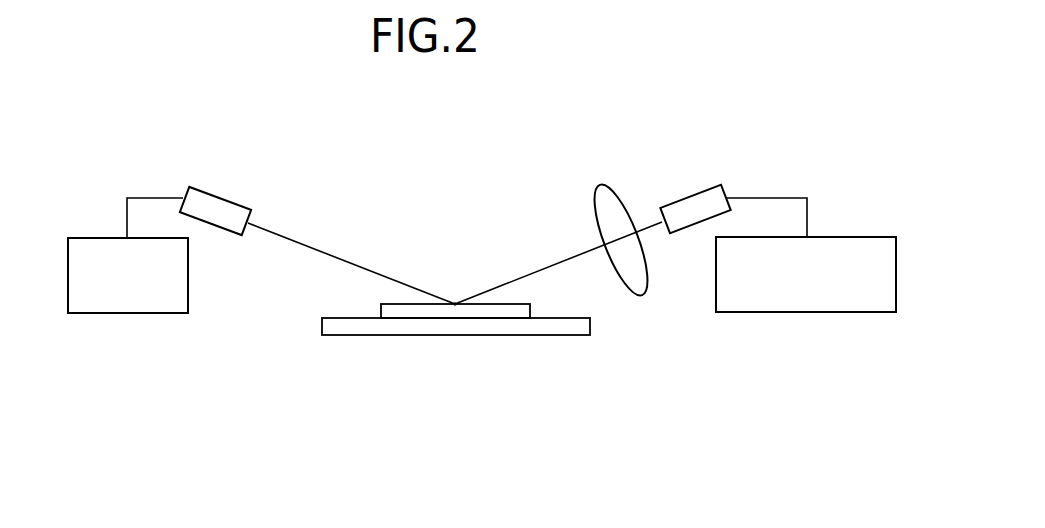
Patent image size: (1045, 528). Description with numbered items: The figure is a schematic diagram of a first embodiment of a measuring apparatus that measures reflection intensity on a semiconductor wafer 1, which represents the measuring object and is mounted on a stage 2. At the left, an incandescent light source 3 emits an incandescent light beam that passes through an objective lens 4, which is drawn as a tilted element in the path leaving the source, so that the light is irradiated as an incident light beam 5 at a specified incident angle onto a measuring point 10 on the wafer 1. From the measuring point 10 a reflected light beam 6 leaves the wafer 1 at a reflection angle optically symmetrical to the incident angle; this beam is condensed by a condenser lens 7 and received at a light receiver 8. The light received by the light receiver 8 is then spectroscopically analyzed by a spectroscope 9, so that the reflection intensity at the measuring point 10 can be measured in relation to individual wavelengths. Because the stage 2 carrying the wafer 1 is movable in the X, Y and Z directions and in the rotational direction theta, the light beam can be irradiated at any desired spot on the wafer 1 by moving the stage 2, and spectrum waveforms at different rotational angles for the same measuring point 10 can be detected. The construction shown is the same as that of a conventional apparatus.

The semiconductor wafer 1 is at (381, 315).
The stage 2 is at (455, 336).
The incandescent light source 3 is at (128, 314).
The objective lens 4 is at (221, 198).
The incident light beam 5 is at (380, 273).
The reflected light beam 6 is at (532, 273).
The condenser lens 7 is at (603, 183).
The light receiver 8 is at (693, 196).
The spectroscope 9 is at (805, 313).
The measuring point 10 is at (456, 302).